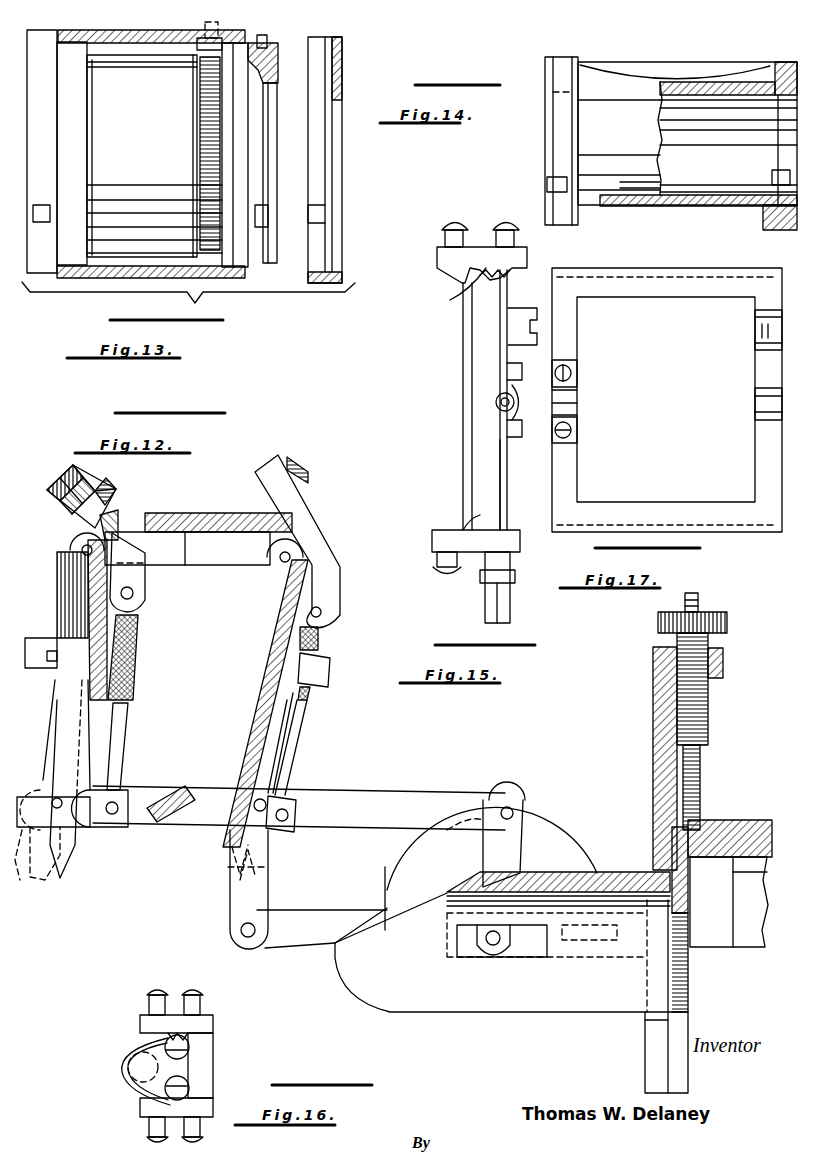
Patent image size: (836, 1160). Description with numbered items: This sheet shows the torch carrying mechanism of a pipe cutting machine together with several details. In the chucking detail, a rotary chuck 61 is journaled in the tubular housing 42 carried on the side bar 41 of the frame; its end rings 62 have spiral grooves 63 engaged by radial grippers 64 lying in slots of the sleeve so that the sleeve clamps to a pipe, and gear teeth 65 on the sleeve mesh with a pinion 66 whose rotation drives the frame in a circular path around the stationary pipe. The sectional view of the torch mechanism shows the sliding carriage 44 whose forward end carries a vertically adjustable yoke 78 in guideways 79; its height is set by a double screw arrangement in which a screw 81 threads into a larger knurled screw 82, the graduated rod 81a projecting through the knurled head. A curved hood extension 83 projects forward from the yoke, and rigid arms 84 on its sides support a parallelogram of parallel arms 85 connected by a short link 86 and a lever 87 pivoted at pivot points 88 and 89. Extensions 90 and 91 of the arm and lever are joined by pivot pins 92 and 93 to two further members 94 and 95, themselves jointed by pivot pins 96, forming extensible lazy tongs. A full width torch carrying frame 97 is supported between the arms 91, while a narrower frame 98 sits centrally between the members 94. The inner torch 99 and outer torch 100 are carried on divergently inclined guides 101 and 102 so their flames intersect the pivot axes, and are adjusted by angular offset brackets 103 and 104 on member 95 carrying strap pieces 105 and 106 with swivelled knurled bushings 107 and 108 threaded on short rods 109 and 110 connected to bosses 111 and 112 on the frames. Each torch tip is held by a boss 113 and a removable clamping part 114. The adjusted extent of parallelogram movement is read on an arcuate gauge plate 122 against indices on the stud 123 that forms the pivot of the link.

In FIG. 12, the side bar 41 is at (748, 935).
In FIG. 13, the tubular housing 42 is at (100, 278).
In FIG. 12, the sliding carriage 44 is at (738, 826).
In FIG. 13, the rotary chuck 61 is at (118, 157).
In FIG. 13, the end ring 62 is at (262, 150).
In FIG. 13, the spiral groove 63 is at (276, 60).
In FIG. 13, the radial gripper 64 is at (267, 45).
In FIG. 13, the gear teeth 65 is at (200, 140).
In FIG. 13, the pinion 66 is at (197, 45).
In FIG. 12, the vertically adjustable yoke 78 is at (652, 727).
In FIG. 12, the guideway 79 is at (652, 1060).
In FIG. 12, the screw 81 is at (700, 768).
In FIG. 12, the graduated rod 81a is at (700, 605).
In FIG. 12, the screw 82 is at (708, 712).
In FIG. 12, the extension 83 is at (350, 985).
In FIG. 12, the rigid arm 84 is at (308, 912).
In FIG. 12, the parallel arm 85 is at (405, 800).
In FIG. 12, the short link 86 is at (483, 852).
In FIG. 12, the lever 87 is at (270, 875).
In FIG. 12, the pivot point 88 is at (240, 940).
In FIG. 15, the pivot point 89 is at (510, 612).
In FIG. 12, the pivot point 89 is at (280, 785).
In FIG. 12, the extension of arm 90 is at (178, 823).
In FIG. 15, the extension of lever 91 is at (483, 252).
In FIG. 12, the extension of lever 91 is at (262, 640).
In FIG. 12, the pivot pin 92 is at (70, 822).
In FIG. 12, the pivot pin 93 is at (278, 565).
In FIG. 16, the member 94 is at (140, 1022).
In FIG. 12, the member 94 is at (50, 718).
In FIG. 12, the member 95 is at (232, 568).
In FIG. 12, the pivot pin 96 is at (80, 545).
In FIG. 15, the torch carrying frame 97 is at (505, 485).
In FIG. 17, the torch carrying frame 97 is at (580, 500).
In FIG. 12, the torch carrying frame 97 is at (297, 722).
In FIG. 16, the torch carrying frame 98 is at (205, 1048).
In FIG. 12, the torch carrying frame 98 is at (52, 750).
In FIG. 15, the inner torch 99 is at (495, 400).
In FIG. 12, the inner torch 99 is at (232, 855).
In FIG. 16, the outer torch 100 is at (128, 1072).
In FIG. 12, the outer torch 100 is at (60, 868).
In FIG. 15, the guide 101 is at (452, 300).
In FIG. 12, the guide 101 is at (232, 872).
In FIG. 16, the guide 102 is at (182, 1033).
In FIG. 12, the guide 102 is at (62, 594).
In FIG. 12, the angular offset bracket 103 is at (265, 483).
In FIG. 12, the angular offset bracket 104 is at (47, 490).
In FIG. 12, the strap piece 105 is at (312, 512).
In FIG. 12, the strap piece 106 is at (115, 512).
In FIG. 12, the knurled bushing 107 is at (320, 640).
In FIG. 12, the knurled bushing 108 is at (140, 648).
In FIG. 12, the short rod 109 is at (297, 750).
In FIG. 12, the short rod 110 is at (128, 735).
In FIG. 12, the boss 111 is at (295, 830).
In FIG. 12, the boss 112 is at (118, 795).
In FIG. 15, the boss 113 is at (520, 430).
In FIG. 17, the boss 113 is at (770, 408).
In FIG. 12, the boss 113 is at (19, 864).
In FIG. 15, the removable clamping part 114 is at (505, 375).
In FIG. 17, the removable clamping part 114 is at (575, 408).
In FIG. 12, the removable clamping part 114 is at (40, 634).
In FIG. 12, the arcuate gauge plate 122 is at (555, 837).
In FIG. 12, the stud 123 is at (540, 782).